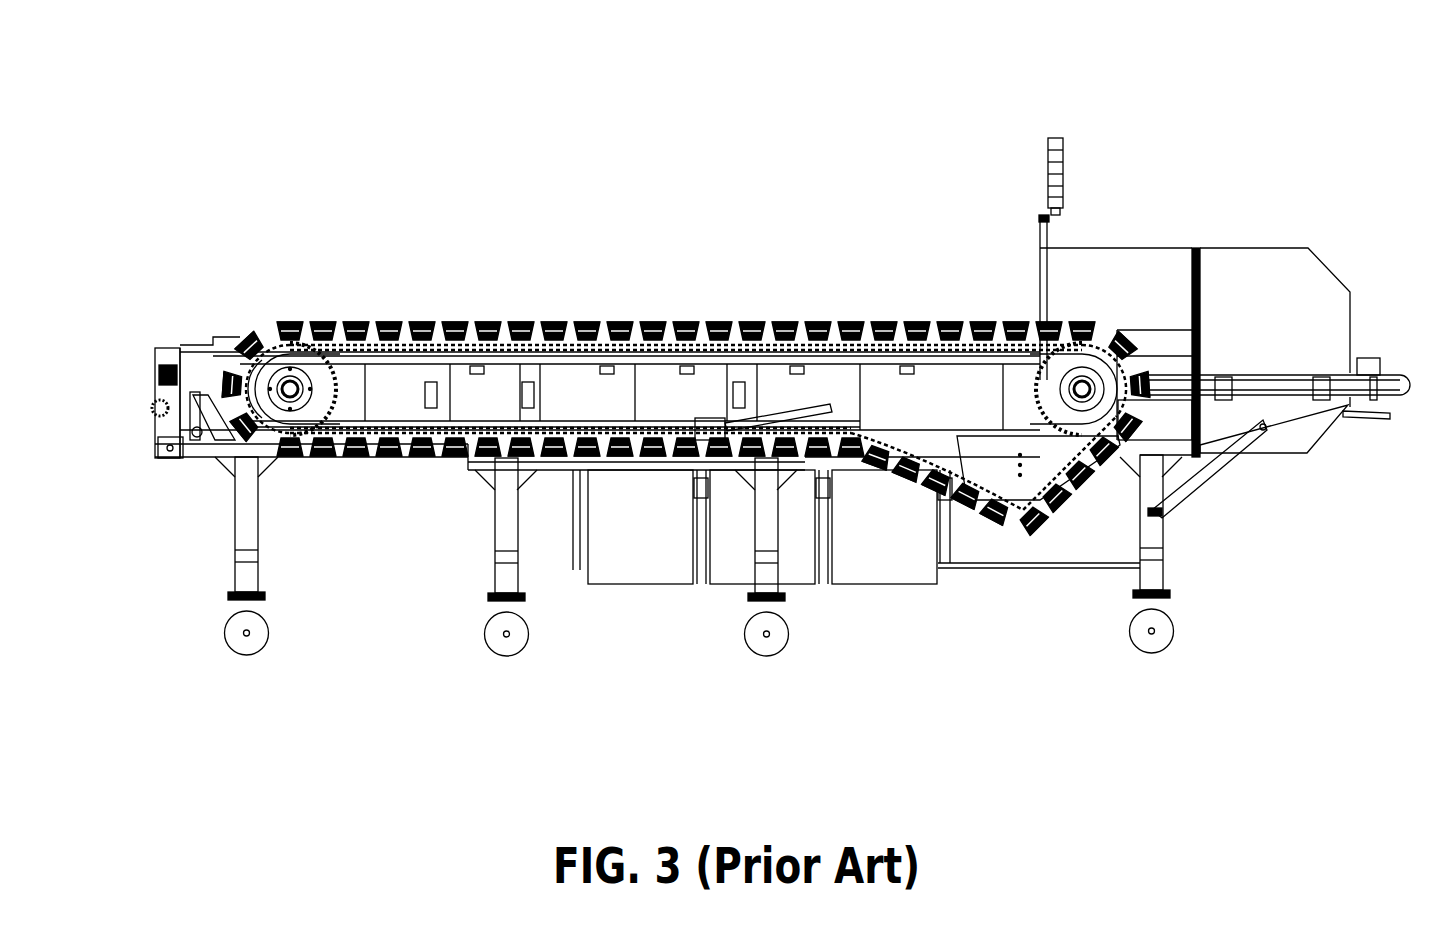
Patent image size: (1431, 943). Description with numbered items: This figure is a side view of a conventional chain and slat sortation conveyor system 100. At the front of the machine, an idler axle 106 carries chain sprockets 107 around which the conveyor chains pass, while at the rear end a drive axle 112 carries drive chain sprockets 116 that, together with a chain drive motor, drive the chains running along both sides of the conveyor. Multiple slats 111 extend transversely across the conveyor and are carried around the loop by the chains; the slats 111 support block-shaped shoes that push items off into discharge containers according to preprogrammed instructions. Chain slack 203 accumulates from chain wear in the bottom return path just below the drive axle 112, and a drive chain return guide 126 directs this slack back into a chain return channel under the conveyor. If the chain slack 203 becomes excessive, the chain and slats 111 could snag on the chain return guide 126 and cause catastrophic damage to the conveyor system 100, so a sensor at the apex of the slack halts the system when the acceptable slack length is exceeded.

The sortation conveyor system 100 is at (961, 96).
The idler axle 106 is at (314, 392).
The chain sprockets 107 is at (322, 377).
The slats 111 is at (160, 410).
The drive axle 112 is at (1082, 372).
The drive chain sprockets 116 is at (1038, 323).
The drive chain return guide 126 is at (948, 467).
The chain slack 203 is at (1062, 488).